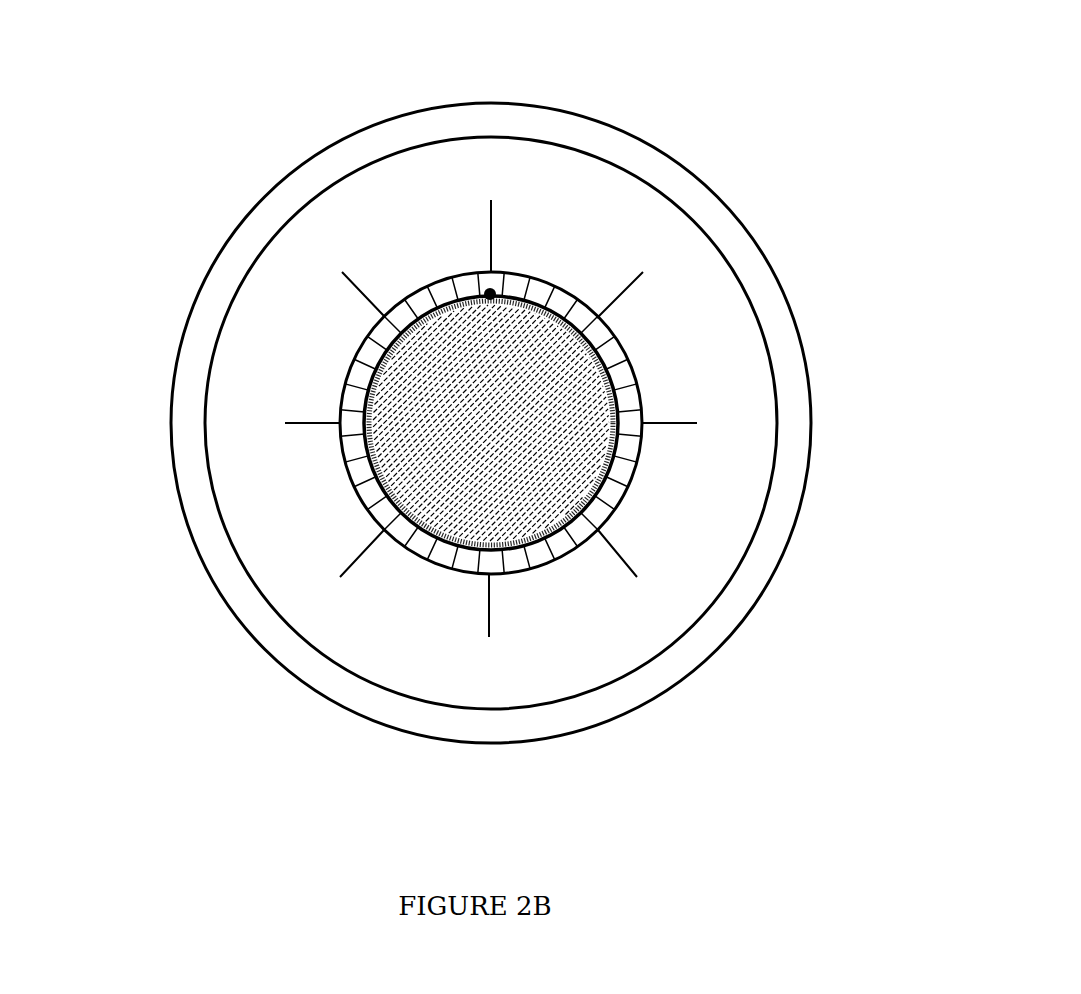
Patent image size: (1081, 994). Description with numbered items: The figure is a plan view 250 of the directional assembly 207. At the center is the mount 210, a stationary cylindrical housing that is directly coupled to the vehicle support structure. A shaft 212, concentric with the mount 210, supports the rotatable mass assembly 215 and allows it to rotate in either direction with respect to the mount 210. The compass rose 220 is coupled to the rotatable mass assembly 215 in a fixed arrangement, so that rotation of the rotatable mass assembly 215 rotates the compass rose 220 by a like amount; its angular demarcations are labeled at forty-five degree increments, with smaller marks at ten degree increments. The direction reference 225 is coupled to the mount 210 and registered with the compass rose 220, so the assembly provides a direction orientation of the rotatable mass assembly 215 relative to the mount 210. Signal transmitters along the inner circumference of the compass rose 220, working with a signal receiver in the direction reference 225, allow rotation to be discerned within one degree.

The plan view 250 is at (960, 97).
The rotatable mass assembly 215 is at (789, 292).
The directional assembly 207 is at (872, 512).
The compass rose 220 is at (567, 288).
The shaft 212 is at (632, 477).
The mount 210 is at (622, 354).
The direction reference 225 is at (495, 286).